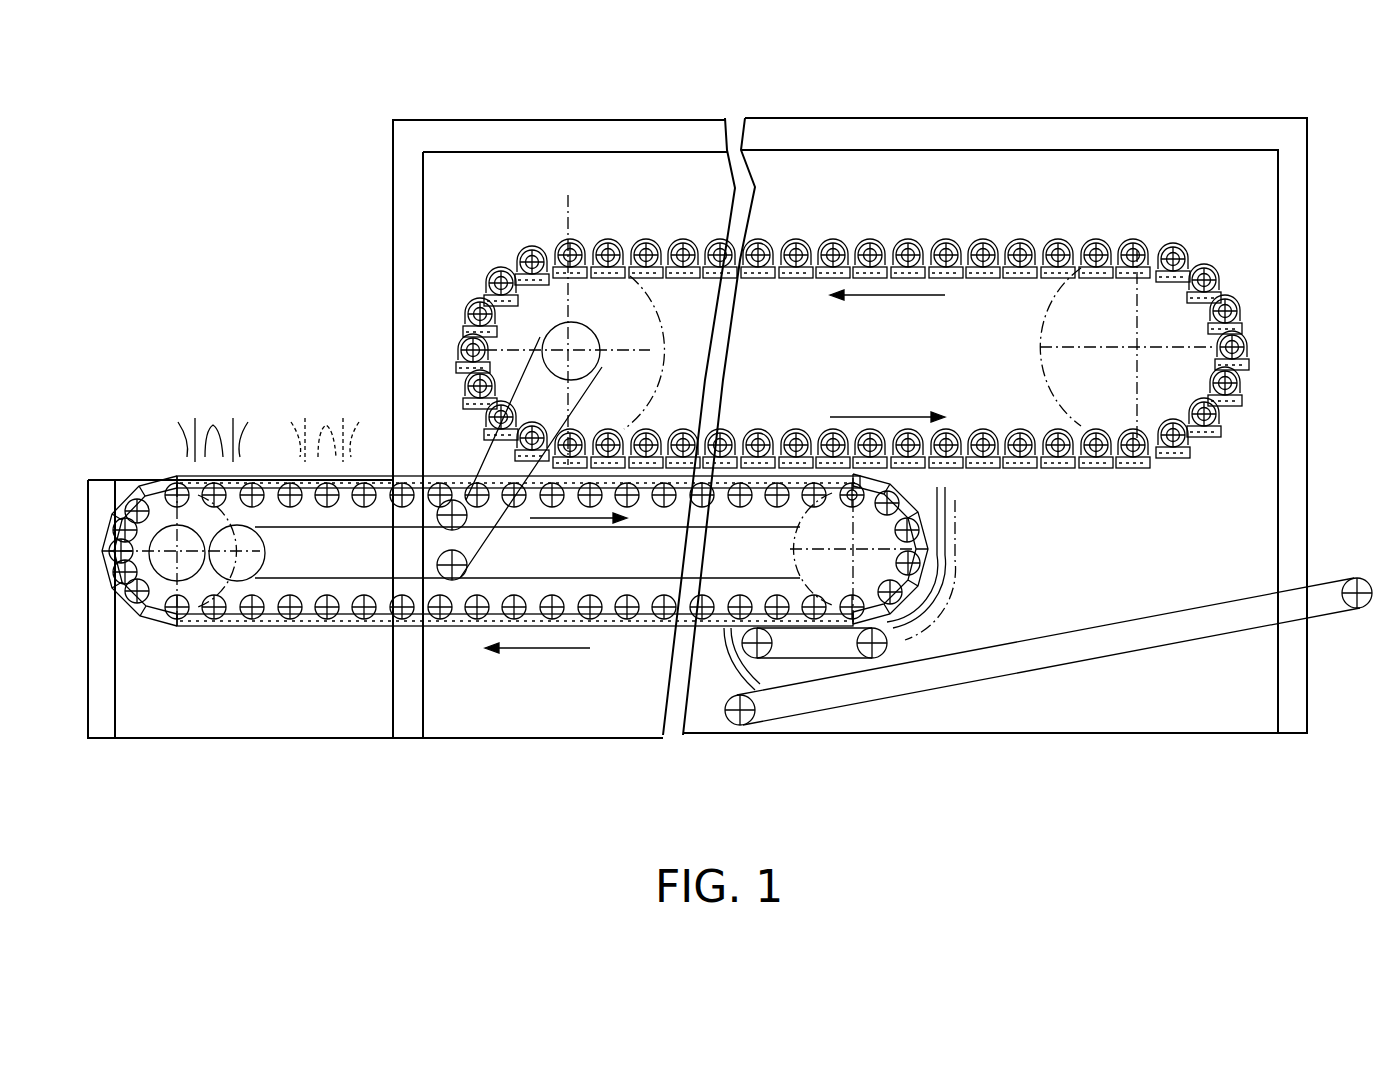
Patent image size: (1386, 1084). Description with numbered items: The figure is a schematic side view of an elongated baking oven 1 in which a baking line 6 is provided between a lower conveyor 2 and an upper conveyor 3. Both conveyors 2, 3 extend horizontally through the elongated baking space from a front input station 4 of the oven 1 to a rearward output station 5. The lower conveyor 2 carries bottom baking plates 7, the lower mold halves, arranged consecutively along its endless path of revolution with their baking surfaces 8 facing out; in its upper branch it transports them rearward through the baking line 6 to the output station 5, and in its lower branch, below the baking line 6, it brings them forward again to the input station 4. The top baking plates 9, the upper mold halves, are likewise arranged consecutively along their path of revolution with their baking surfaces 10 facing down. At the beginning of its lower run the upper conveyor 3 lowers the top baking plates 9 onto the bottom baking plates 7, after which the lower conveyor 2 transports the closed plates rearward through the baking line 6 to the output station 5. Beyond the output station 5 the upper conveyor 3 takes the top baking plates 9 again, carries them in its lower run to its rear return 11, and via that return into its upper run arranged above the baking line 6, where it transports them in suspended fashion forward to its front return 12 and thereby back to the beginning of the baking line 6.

The baking oven 1 is at (952, 102).
The lower conveyor 2 is at (529, 528).
The upper conveyor 3 is at (857, 259).
The input station 4 is at (250, 340).
The output station 5 is at (1070, 688).
The baking line 6 is at (777, 436).
The bottom baking plates 7 is at (317, 627).
The baking surfaces 8 is at (303, 630).
The top baking plates 9 is at (998, 277).
The baking surfaces 10 is at (979, 277).
The rear return 11 is at (1160, 312).
The front return 12 is at (541, 312).